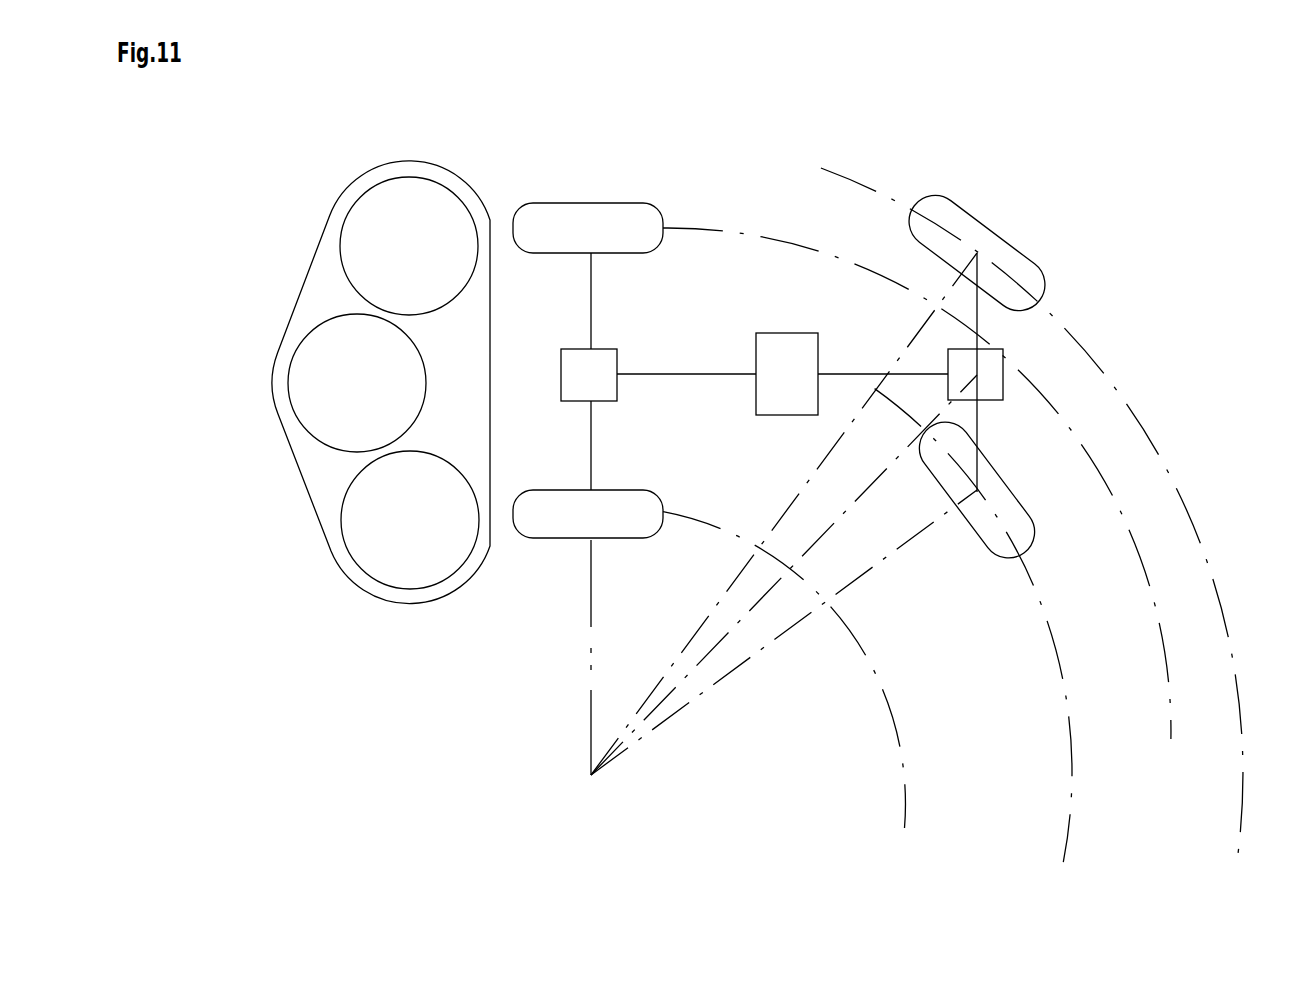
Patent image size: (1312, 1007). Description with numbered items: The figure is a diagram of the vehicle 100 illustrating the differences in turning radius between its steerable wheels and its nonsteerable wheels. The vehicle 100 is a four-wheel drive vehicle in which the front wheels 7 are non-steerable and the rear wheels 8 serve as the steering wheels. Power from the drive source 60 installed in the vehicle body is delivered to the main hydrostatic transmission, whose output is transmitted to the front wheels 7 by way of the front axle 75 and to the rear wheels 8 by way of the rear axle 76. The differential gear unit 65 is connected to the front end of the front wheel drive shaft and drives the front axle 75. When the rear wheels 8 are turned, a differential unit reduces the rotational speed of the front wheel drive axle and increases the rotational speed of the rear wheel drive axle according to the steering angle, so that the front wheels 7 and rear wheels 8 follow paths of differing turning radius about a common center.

The vehicle 100 is at (480, 154).
The front wheel 7 is at (582, 220).
The front axle 75 is at (592, 287).
The differential gear unit 65 is at (573, 378).
The drive source 60 is at (772, 358).
The rear axle 76 is at (977, 332).
The rear wheel 8 is at (1002, 253).